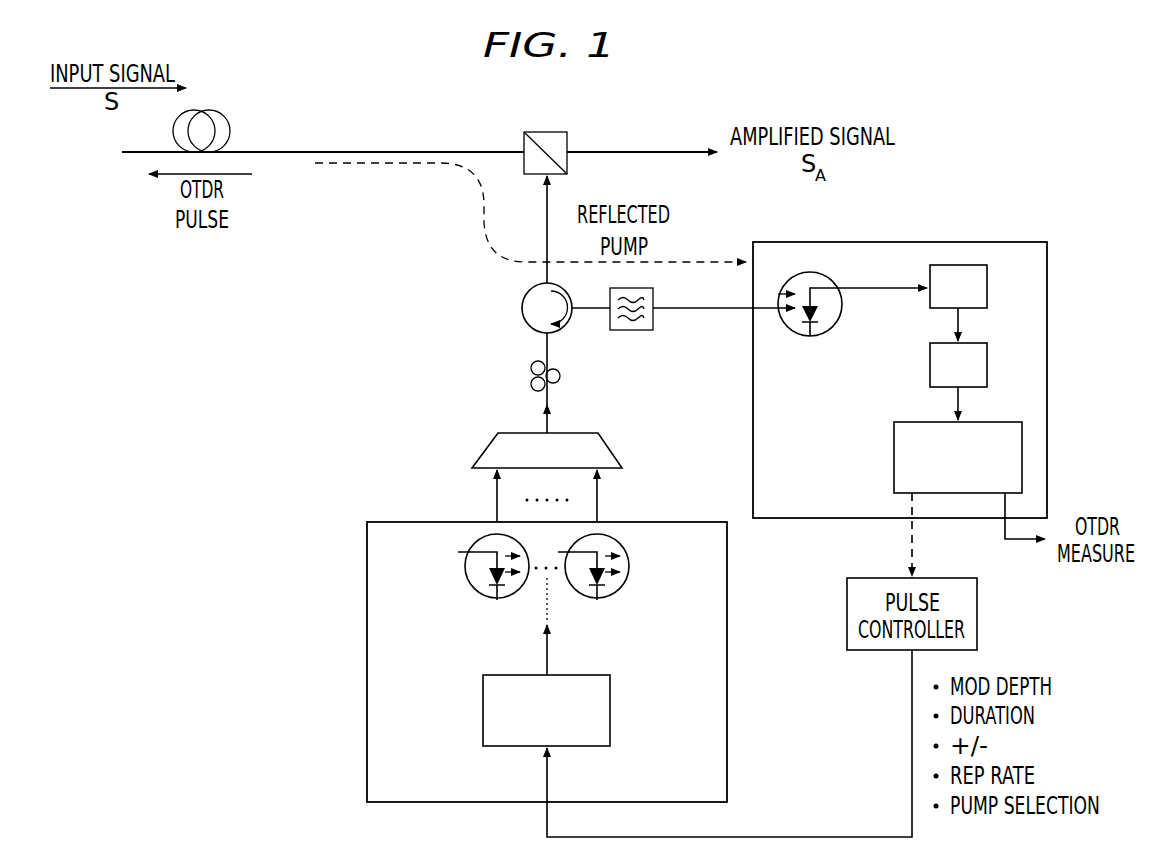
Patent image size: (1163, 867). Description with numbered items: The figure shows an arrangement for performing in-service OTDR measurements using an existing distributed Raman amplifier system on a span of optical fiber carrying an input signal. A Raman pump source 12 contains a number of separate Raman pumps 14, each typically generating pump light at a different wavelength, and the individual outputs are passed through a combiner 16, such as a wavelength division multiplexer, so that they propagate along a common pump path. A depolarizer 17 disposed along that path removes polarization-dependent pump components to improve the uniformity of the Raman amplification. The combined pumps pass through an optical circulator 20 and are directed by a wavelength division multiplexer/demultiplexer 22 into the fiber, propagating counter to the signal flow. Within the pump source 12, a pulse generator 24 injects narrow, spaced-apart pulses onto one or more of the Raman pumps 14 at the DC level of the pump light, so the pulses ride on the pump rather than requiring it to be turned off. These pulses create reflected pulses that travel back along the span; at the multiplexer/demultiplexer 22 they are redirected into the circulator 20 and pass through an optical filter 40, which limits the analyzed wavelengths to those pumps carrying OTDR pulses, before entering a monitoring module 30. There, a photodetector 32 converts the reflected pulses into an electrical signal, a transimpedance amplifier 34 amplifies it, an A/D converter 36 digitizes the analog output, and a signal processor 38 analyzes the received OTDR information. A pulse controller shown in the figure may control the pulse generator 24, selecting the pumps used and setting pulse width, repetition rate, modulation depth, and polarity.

The Raman pump source 12 is at (366, 781).
The set of Raman pumps 14 is at (530, 582).
The combiner 16 is at (492, 450).
The depolarizer 17 is at (560, 376).
The optical circulator 20 is at (520, 308).
The wavelength division multiplexer/demultiplexer 22 is at (546, 132).
The pulse generator 24 is at (483, 712).
The monitoring module 30 is at (988, 242).
The photodetector 32 is at (832, 330).
The transimpedance amplifier 34 is at (988, 290).
The A/D converter 36 is at (988, 366).
The signal processor 38 is at (893, 455).
The optical filter 40 is at (645, 330).